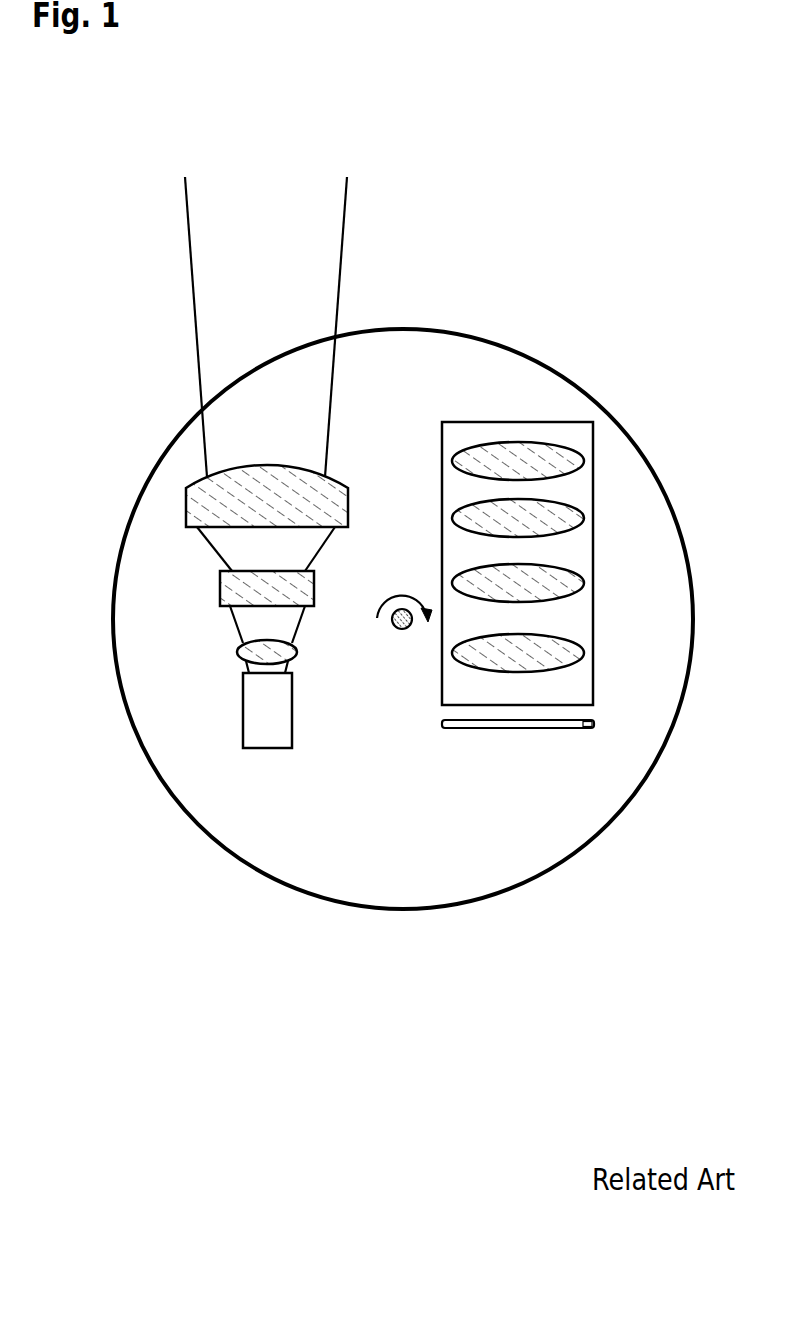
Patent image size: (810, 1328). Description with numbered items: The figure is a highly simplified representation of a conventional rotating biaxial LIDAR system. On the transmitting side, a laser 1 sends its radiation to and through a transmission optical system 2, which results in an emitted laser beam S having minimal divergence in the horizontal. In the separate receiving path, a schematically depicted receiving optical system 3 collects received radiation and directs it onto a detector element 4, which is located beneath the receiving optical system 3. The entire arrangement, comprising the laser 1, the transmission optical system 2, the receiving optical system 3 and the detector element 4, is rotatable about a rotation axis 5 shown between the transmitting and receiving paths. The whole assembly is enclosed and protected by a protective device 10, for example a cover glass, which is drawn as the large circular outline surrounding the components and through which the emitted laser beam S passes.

The laser 1 is at (258, 715).
The transmission optical system 2 is at (262, 652).
The receiving optical system 3 is at (578, 549).
The detector element 4 is at (594, 723).
The rotation axis 5 is at (400, 629).
The protective device 10 is at (485, 338).
The emitted laser beam S is at (195, 327).